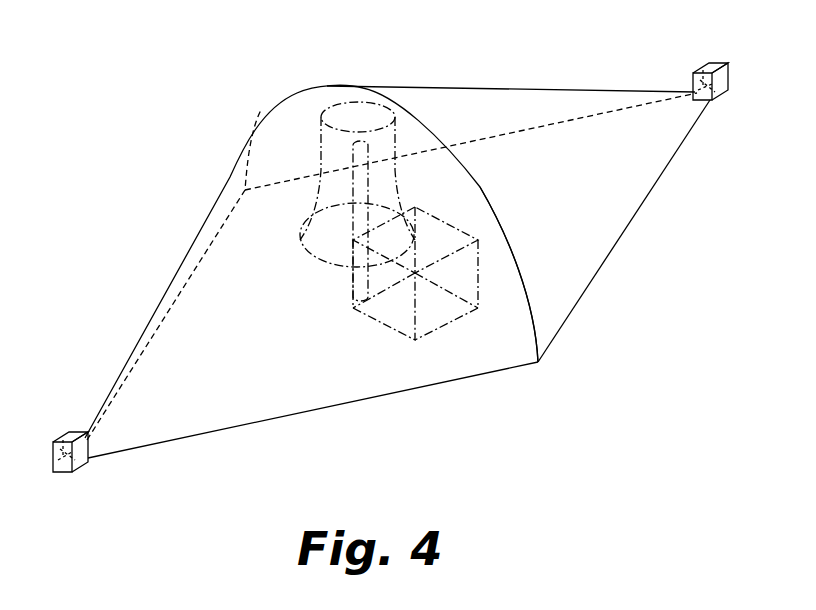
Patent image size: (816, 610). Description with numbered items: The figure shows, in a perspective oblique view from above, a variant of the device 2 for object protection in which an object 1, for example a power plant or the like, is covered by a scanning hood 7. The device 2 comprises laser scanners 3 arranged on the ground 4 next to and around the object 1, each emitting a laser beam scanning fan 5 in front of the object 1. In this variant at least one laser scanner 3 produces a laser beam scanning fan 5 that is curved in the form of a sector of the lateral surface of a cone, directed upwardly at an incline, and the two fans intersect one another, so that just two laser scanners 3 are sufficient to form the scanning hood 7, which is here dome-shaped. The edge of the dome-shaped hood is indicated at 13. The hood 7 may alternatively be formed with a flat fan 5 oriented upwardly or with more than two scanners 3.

The object 1 is at (297, 308).
The device 2 is at (135, 133).
The laser scanner 3 is at (710, 70).
The ground 4 is at (486, 356).
The laser beam scanning fan 5 is at (538, 98).
The scanning hood 7 is at (300, 120).
The edge of hood 13 is at (493, 213).